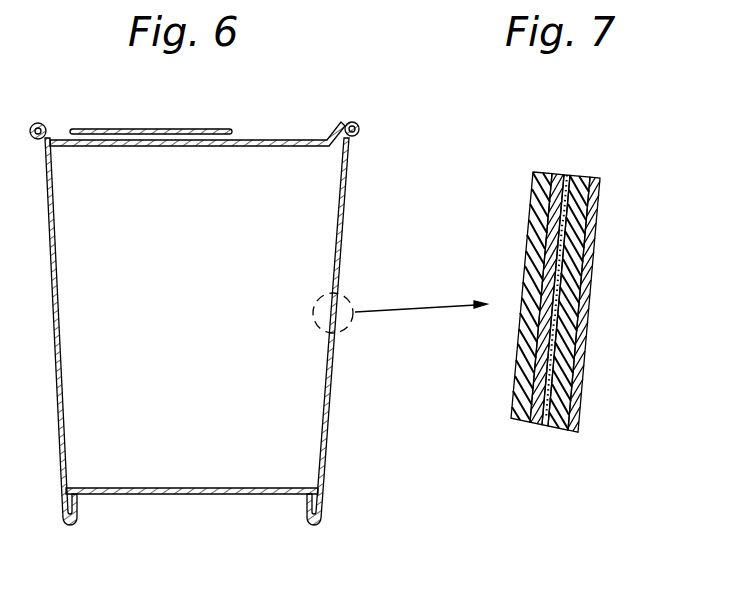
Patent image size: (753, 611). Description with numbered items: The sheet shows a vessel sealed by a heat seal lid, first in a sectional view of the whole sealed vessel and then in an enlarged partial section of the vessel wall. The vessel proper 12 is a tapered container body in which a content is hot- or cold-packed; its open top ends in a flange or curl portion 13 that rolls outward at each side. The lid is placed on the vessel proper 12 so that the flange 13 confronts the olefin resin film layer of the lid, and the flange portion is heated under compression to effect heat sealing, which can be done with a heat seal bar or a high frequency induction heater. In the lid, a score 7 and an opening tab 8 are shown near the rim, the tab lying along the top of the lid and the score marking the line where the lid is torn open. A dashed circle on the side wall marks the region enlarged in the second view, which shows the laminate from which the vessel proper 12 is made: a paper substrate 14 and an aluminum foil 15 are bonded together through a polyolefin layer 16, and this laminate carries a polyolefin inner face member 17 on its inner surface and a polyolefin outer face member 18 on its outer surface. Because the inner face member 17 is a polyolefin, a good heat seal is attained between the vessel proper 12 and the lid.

In FIG. 6, the score 7 is at (62, 128).
In FIG. 6, the opening tab 8 is at (155, 128).
In FIG. 6, the vessel proper 12 is at (348, 232).
In FIG. 6, the flange or curl portion 13 is at (360, 137).
In FIG. 7, the paper substrate 14 is at (570, 333).
In FIG. 7, the aluminum foil 15 is at (535, 387).
In FIG. 7, the polyolefin layer 16 is at (543, 428).
In FIG. 7, the inner face member composed of a polyolefin 17 is at (522, 340).
In FIG. 7, the outer face member composed of a polyolefin 18 is at (573, 409).